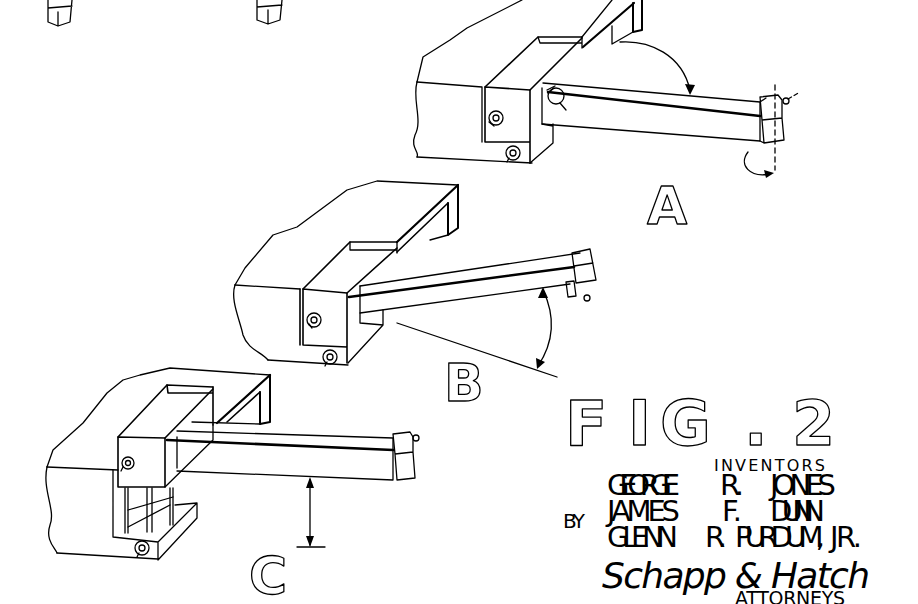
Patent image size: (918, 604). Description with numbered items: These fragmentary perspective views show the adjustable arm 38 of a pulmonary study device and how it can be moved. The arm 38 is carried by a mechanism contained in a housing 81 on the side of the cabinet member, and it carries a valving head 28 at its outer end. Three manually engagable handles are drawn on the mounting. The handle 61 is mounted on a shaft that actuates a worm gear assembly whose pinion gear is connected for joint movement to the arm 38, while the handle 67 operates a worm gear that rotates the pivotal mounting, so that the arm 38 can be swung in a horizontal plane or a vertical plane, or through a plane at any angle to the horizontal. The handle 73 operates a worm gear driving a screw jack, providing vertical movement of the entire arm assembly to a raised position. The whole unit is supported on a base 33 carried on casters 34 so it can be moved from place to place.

In FIG. 2A, the valving head 28 is at (783, 132).
In FIG. 2B, the valving head 28 is at (605, 279).
In FIG. 2C, the valving head 28 is at (410, 474).
In FIG. 2A, the arm 38 is at (723, 100).
In FIG. 2B, the arm 38 is at (492, 267).
In FIG. 2C, the arm 38 is at (322, 436).
In FIG. 2A, the manually engagable handle 61 is at (564, 112).
In FIG. 2A, the manually engagable handle 67 is at (489, 119).
In FIG. 2B, the manually engagable handle 67 is at (307, 320).
In FIG. 2C, the manually engagable handle 67 is at (120, 467).
In FIG. 2A, the manually engagable handle 73 is at (516, 162).
In FIG. 2B, the manually engagable handle 73 is at (354, 361).
In FIG. 2C, the manually engagable handle 73 is at (145, 556).
In FIG. 2A, the housing 81 is at (530, 66).
In FIG. 2B, the housing 81 is at (348, 268).
In FIG. 2C, the housing 81 is at (150, 421).
In FIG. 2C, the base 33 is at (165, 0).
In FIG. 2C, the casters 34 is at (57, 20).